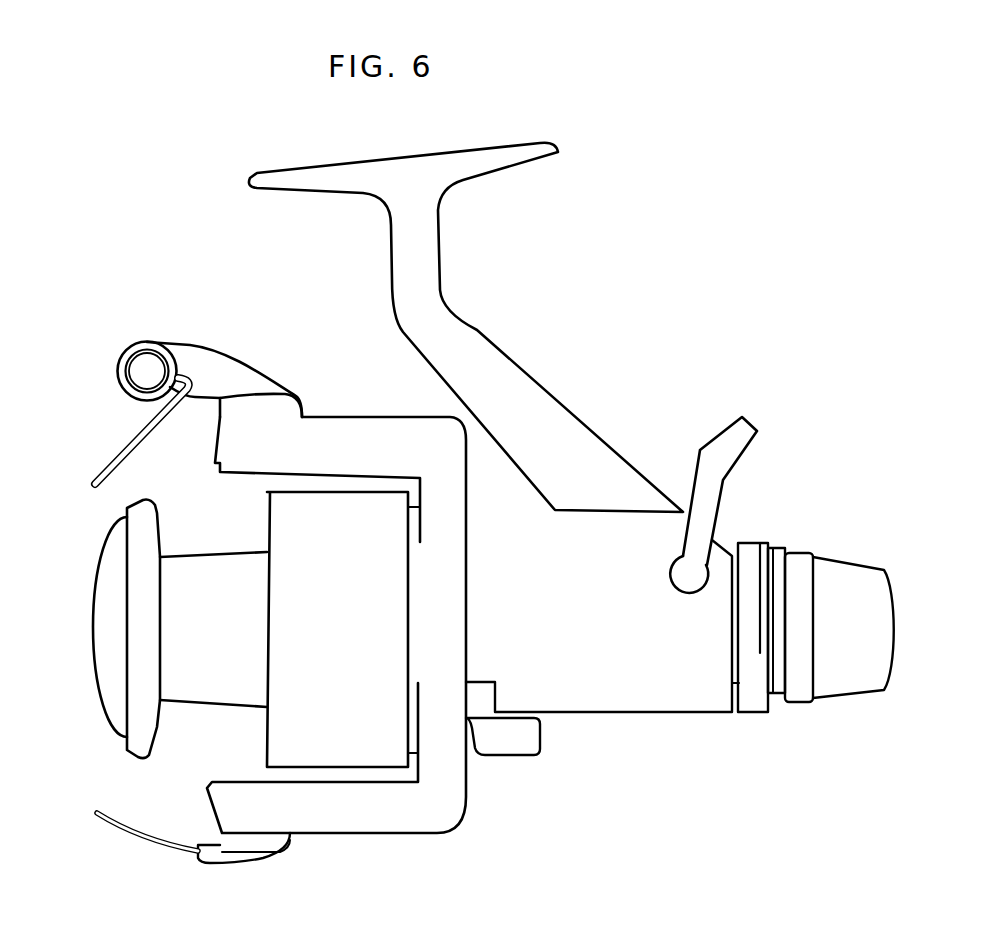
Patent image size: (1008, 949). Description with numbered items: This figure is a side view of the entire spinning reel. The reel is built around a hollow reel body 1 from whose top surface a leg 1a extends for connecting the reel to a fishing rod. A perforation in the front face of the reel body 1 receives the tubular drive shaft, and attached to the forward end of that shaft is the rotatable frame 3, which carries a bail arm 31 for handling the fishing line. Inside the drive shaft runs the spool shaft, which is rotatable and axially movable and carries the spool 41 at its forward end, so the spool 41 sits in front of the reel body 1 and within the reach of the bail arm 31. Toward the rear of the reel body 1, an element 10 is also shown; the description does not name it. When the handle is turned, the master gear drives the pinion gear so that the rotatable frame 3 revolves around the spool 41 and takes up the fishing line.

The reel body 1 is at (638, 716).
The leg 1a is at (480, 338).
The rotatable frame 3 is at (357, 419).
The lever 10 is at (725, 468).
The bail arm 31 is at (123, 452).
The spool 41 is at (210, 708).